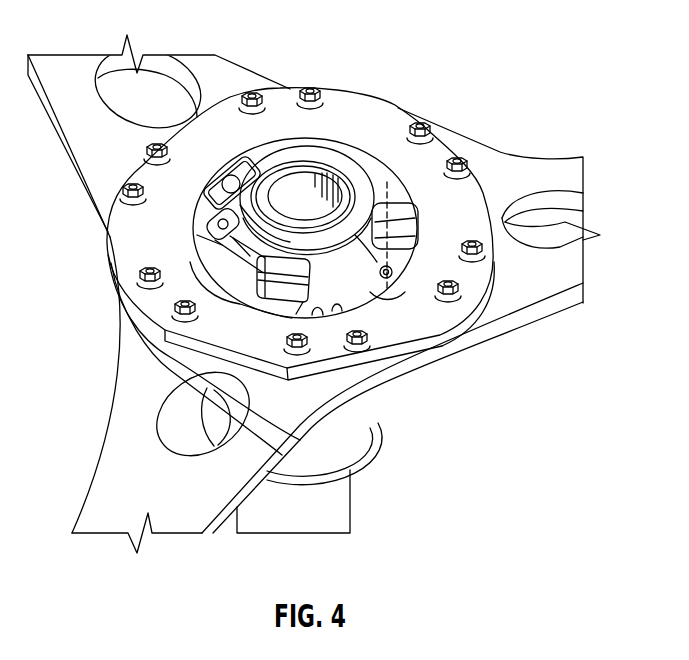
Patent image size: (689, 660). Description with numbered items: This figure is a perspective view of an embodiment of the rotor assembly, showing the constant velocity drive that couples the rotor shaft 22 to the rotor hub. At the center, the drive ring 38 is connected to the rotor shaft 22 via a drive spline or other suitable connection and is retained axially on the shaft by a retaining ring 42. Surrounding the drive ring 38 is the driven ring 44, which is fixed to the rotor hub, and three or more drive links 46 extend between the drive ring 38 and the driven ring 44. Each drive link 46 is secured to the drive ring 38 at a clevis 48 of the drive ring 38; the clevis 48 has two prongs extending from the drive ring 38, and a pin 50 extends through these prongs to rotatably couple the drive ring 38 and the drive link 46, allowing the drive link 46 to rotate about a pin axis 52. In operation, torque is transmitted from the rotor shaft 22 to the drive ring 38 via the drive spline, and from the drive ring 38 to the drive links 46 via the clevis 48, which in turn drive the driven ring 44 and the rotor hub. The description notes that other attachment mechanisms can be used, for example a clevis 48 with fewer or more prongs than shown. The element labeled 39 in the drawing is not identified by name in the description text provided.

The rotor shaft 22 is at (343, 184).
The drive ring 38 is at (133, 319).
The arm side edge 39 is at (82, 130).
The retaining ring 42 is at (309, 160).
The driven ring 44 is at (120, 230).
The drive link 46 is at (420, 178).
The clevis 48 is at (363, 278).
The pin 50 is at (390, 277).
The pin axis 52 is at (398, 183).